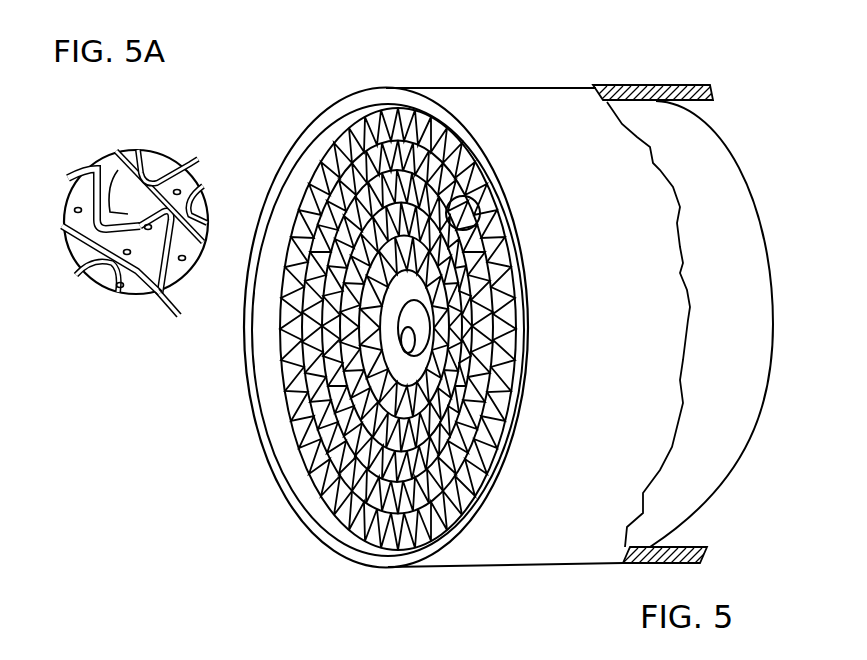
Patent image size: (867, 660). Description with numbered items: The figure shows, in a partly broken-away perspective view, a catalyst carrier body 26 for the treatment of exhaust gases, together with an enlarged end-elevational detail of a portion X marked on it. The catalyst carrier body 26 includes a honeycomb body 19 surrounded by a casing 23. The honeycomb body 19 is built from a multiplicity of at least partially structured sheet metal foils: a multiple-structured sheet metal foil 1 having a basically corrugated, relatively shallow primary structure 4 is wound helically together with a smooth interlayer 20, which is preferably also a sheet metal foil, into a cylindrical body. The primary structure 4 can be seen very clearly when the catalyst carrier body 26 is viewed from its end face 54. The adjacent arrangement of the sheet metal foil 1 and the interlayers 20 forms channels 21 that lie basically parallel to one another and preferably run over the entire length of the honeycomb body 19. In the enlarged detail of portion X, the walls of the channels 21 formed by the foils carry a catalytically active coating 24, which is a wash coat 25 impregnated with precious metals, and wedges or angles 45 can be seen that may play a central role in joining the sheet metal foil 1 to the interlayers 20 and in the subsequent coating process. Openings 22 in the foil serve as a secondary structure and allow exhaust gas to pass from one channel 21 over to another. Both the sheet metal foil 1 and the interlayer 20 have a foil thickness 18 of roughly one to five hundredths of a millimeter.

In FIG. 5, the multiple-structured sheet metal foil 1 is at (354, 329).
In FIG. 5A, the multiple-structured sheet metal foil 1 is at (83, 178).
In FIG. 5, the primary structure 4 is at (320, 214).
In FIG. 5A, the foil thickness 18 is at (210, 293).
In FIG. 5, the honeycomb body 19 is at (736, 222).
In FIG. 5, the smooth interlayer 20 is at (307, 365).
In FIG. 5A, the smooth interlayer 20 is at (72, 236).
In FIG. 5, the channels 21 is at (352, 156).
In FIG. 5A, the openings 22 is at (110, 173).
In FIG. 5, the casing 23 is at (330, 124).
In FIG. 5A, the catalytically active coating 24 is at (80, 206).
In FIG. 5A, the wash coat 25 is at (143, 265).
In FIG. 5, the catalyst carrier body 26 is at (566, 71).
In FIG. 5A, the wedges or angles 45 is at (76, 220).
In FIG. 5, the end face 54 is at (330, 467).
In FIG. 5, the portion X x is at (480, 216).